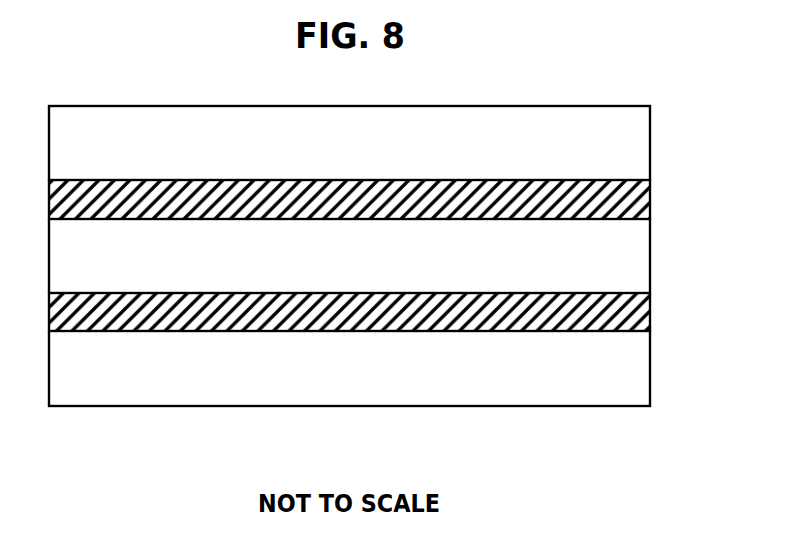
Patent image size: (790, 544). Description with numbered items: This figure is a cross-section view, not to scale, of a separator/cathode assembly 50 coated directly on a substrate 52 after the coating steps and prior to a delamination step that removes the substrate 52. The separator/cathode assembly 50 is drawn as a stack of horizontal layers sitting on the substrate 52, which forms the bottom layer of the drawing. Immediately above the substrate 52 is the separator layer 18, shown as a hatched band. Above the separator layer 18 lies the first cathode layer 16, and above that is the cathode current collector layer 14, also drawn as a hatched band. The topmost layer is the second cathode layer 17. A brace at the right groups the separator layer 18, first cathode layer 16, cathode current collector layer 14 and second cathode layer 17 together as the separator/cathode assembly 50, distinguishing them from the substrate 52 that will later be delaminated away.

The separator/cathode assembly 50 is at (725, 105).
The second cathode layer 17 is at (630, 143).
The cathode current collector layer 14 is at (630, 200).
The first cathode layer 16 is at (630, 256).
The separator layer 18 is at (630, 312).
The substrate 52 is at (630, 368).